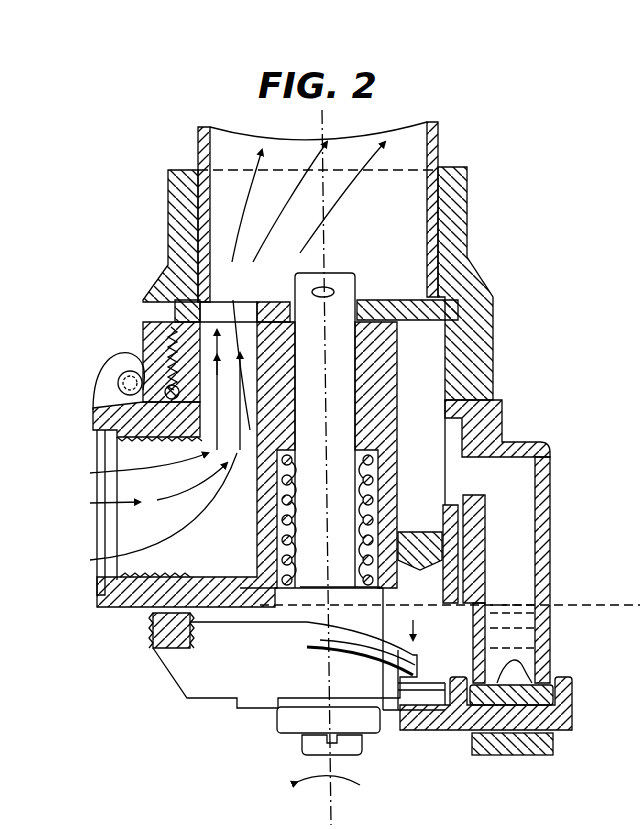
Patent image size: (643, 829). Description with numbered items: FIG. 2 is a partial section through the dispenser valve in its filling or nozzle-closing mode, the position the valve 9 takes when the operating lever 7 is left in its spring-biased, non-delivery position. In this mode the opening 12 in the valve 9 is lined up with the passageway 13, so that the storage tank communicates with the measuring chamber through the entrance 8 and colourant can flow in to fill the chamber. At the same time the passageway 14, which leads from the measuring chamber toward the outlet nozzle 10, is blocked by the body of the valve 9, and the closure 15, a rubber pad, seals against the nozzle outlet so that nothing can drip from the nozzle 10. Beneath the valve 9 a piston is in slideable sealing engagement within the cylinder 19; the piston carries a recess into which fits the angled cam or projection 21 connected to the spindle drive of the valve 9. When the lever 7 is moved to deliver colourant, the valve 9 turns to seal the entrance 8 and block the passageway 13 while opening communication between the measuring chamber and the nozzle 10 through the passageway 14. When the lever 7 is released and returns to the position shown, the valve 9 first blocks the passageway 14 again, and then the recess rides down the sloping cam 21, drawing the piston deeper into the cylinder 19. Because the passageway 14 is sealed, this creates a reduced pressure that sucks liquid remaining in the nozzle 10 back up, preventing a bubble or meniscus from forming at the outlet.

The operating lever 7 is at (237, 685).
The entrance 8 is at (192, 290).
The valve 9 is at (455, 268).
The outlet nozzle 10 is at (543, 630).
The opening 12 is at (176, 317).
The passageway 13 is at (218, 357).
The passageway 14 is at (425, 345).
The closure 15 is at (552, 690).
The cylinder 19 is at (400, 530).
The angled cam/projection 21 is at (287, 672).